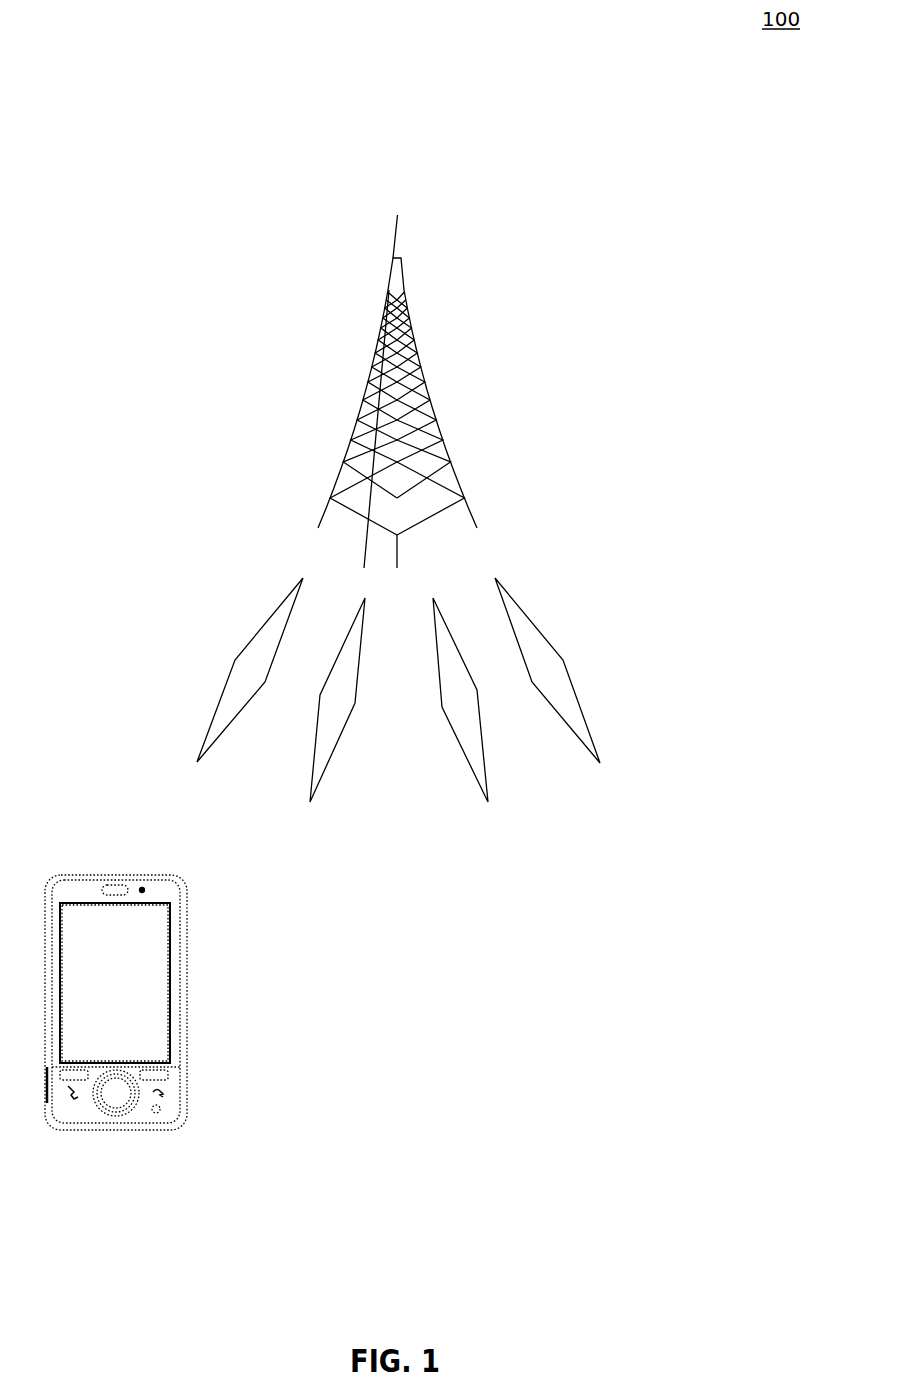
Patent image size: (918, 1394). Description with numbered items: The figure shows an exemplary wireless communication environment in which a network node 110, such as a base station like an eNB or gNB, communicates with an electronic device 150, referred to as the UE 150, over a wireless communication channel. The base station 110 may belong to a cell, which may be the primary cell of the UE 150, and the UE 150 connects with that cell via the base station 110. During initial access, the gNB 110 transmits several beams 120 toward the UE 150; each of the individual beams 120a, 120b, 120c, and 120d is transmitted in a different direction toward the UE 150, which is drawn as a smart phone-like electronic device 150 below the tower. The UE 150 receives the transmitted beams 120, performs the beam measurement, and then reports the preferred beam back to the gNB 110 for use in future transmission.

The network node 110 is at (432, 408).
The beams 120 is at (405, 651).
The beam 120a is at (255, 633).
The beam 120b is at (316, 770).
The beam 120c is at (467, 760).
The beam 120d is at (542, 633).
The electronic device 150 is at (184, 988).